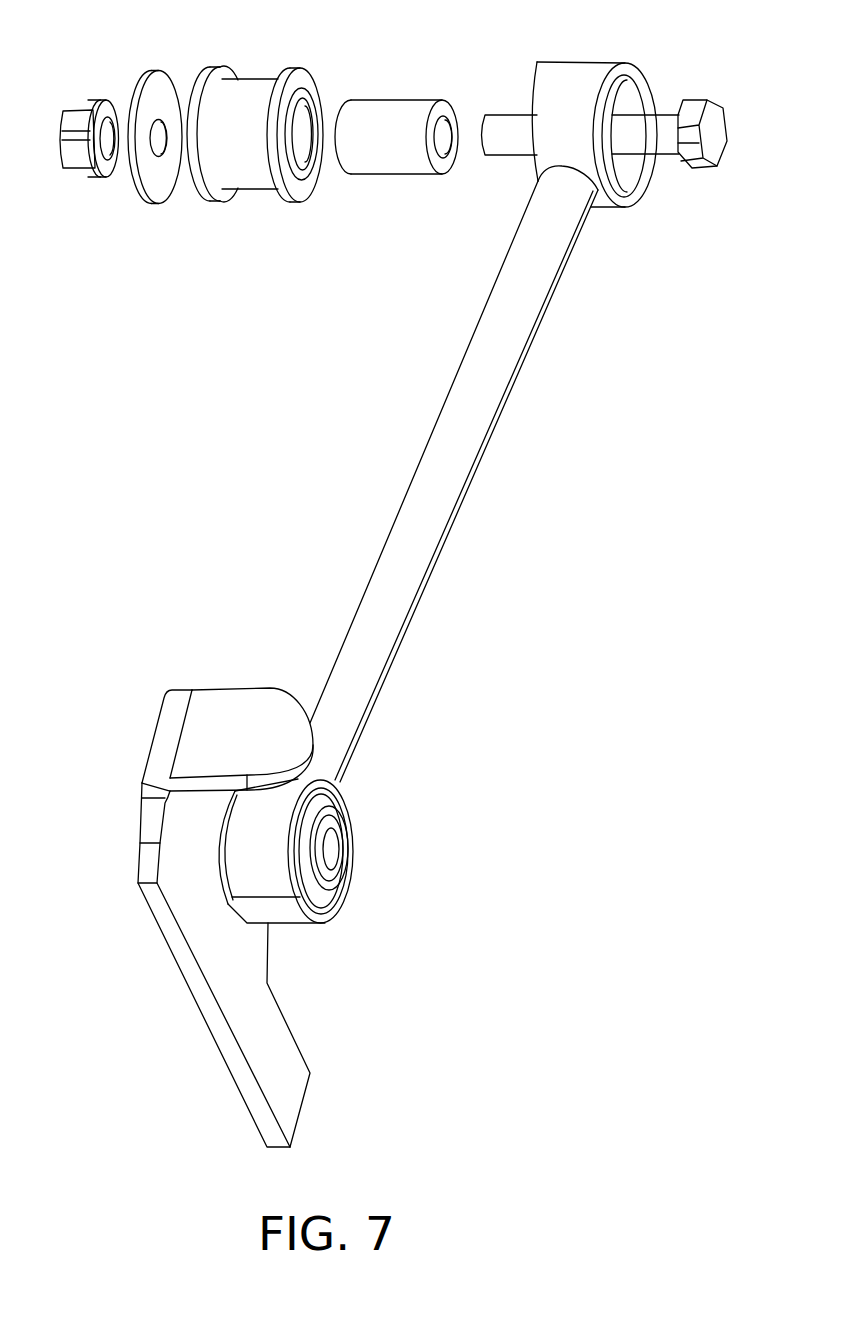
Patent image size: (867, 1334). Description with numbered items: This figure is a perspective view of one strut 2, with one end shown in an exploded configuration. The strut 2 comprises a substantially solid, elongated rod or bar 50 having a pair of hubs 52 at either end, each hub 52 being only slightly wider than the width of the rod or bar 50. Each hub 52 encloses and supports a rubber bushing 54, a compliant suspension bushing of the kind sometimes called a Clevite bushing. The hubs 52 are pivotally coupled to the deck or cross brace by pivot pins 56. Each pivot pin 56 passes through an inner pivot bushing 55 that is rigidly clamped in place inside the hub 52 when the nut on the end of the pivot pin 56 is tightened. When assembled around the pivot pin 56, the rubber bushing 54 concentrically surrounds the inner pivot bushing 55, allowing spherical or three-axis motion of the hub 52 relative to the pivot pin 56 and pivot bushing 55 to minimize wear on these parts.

The strut 2 is at (530, 440).
The rod or bar 50 is at (448, 445).
The hub 52 is at (577, 78).
The rubber bushing 54 is at (238, 93).
The inner pivot bushing 55 is at (375, 113).
The pivot pin 56 is at (660, 123).